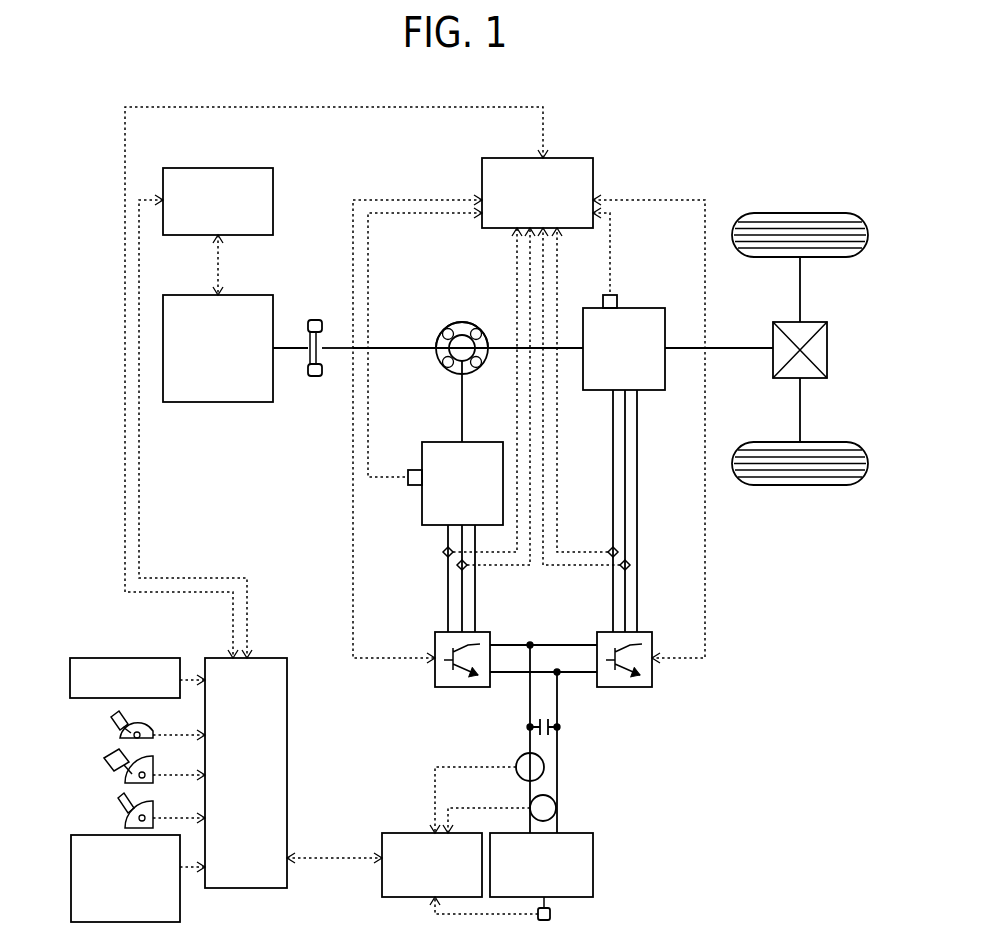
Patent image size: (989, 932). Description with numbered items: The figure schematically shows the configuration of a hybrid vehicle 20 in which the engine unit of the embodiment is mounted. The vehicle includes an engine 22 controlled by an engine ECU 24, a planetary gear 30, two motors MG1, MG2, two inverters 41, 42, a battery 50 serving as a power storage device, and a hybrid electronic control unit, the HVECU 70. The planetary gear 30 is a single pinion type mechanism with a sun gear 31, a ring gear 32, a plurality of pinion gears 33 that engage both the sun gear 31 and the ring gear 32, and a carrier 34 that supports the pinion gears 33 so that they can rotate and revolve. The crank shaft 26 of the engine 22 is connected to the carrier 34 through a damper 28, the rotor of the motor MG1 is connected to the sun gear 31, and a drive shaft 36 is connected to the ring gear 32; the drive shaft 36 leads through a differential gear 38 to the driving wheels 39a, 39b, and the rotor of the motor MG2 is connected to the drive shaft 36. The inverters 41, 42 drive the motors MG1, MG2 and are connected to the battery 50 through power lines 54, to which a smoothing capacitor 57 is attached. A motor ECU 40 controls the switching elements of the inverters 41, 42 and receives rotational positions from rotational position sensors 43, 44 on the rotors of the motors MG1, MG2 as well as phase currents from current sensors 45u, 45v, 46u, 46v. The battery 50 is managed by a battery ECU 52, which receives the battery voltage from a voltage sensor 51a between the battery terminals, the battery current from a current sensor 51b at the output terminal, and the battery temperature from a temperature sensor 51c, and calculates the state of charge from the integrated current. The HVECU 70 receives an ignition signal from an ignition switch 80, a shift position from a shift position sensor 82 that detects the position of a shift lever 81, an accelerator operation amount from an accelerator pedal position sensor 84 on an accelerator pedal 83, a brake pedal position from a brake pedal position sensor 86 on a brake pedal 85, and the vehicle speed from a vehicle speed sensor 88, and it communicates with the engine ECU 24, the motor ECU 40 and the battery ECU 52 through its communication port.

The hybrid vehicle 20 is at (645, 148).
The engine 22 is at (238, 295).
The engine ECU 24 is at (240, 168).
The crank shaft 26 is at (288, 345).
The damper 28 is at (314, 318).
The planetary gear 30 is at (444, 342).
The sun gear 31 is at (467, 335).
The ring gear 32 is at (452, 322).
The pinion gears 33 is at (440, 334).
The carrier 34 is at (440, 357).
The drive shaft 36 is at (745, 346).
The differential gear 38 is at (810, 322).
The driving wheel 39a is at (800, 212).
The driving wheel 39b is at (797, 487).
The motor ECU 40 is at (560, 158).
The motor MG1 is at (438, 442).
The motor MG2 is at (650, 308).
The inverter 41 is at (485, 632).
The inverter 42 is at (647, 632).
The rotational position sensor 43 is at (412, 490).
The rotational position sensor 44 is at (616, 295).
The current sensor 45u is at (443, 552).
The current sensor 45v is at (457, 565).
The current sensor 46u is at (618, 552).
The current sensor 46v is at (630, 565).
The battery 50 is at (595, 862).
The voltage sensor 51a is at (558, 808).
The current sensor 51b is at (546, 767).
The temperature sensor 51c is at (552, 914).
The battery ECU 52 is at (415, 833).
The power lines 54 is at (555, 701).
The smoothing capacitor 57 is at (562, 727).
The hybrid electronic control unit 70 is at (265, 658).
The ignition switch 80 is at (68, 676).
The shift lever 81 is at (112, 722).
The shift position sensor 82 is at (120, 736).
The accelerator pedal 83 is at (105, 759).
The accelerator pedal position sensor 84 is at (128, 778).
The brake pedal 85 is at (118, 801).
The brake pedal position sensor 86 is at (130, 820).
The vehicle speed sensor 88 is at (70, 856).